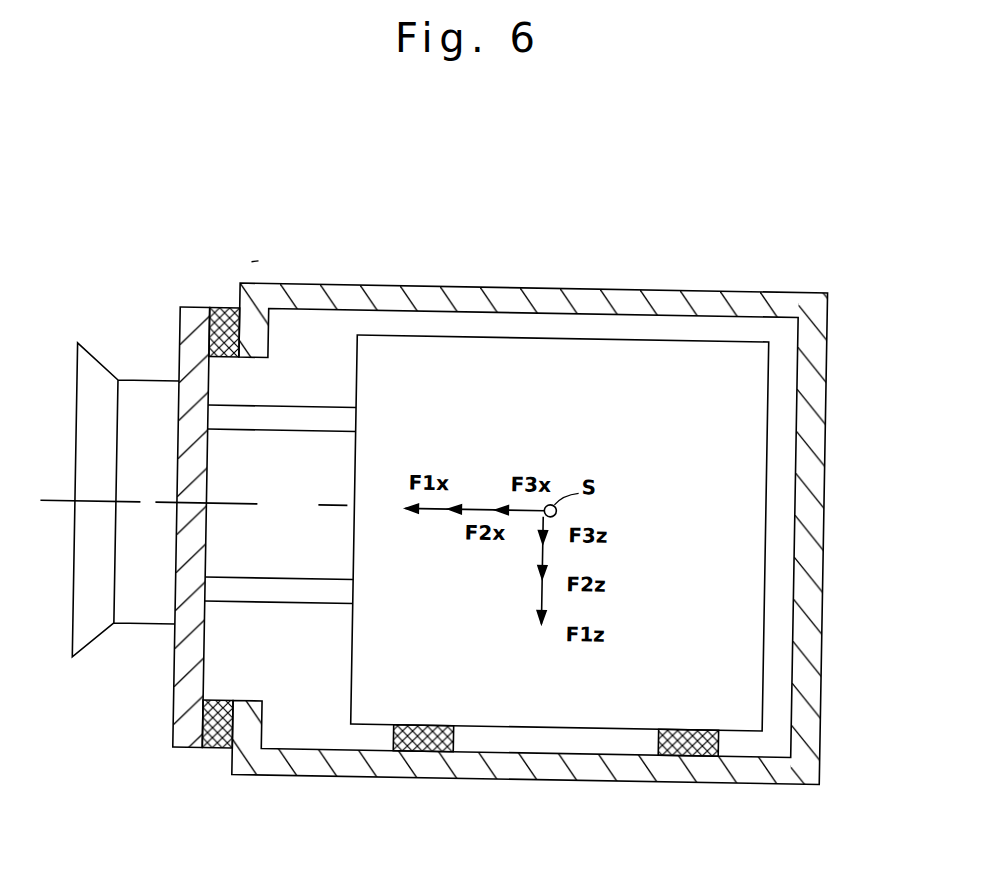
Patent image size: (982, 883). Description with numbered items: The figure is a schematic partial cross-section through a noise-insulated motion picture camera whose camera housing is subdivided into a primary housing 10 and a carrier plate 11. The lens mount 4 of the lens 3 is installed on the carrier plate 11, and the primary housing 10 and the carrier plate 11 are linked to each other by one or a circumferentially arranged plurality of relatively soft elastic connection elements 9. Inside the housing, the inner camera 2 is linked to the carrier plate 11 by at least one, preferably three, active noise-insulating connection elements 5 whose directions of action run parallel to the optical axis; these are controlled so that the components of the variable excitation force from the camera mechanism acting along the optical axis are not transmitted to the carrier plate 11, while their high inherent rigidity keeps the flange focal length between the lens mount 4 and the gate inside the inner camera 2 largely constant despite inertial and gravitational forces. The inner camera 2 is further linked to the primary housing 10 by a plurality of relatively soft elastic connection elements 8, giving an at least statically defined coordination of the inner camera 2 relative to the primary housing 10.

The inner camera 2 is at (740, 401).
The lens 3 is at (92, 375).
The lens mount 4 is at (172, 382).
The active noise-insulating connection elements 5 is at (303, 425).
The elastic connection elements 8 is at (656, 742).
The elastic connection elements 9 is at (221, 312).
The primary housing 10 is at (349, 298).
The carrier plate 11 is at (180, 686).